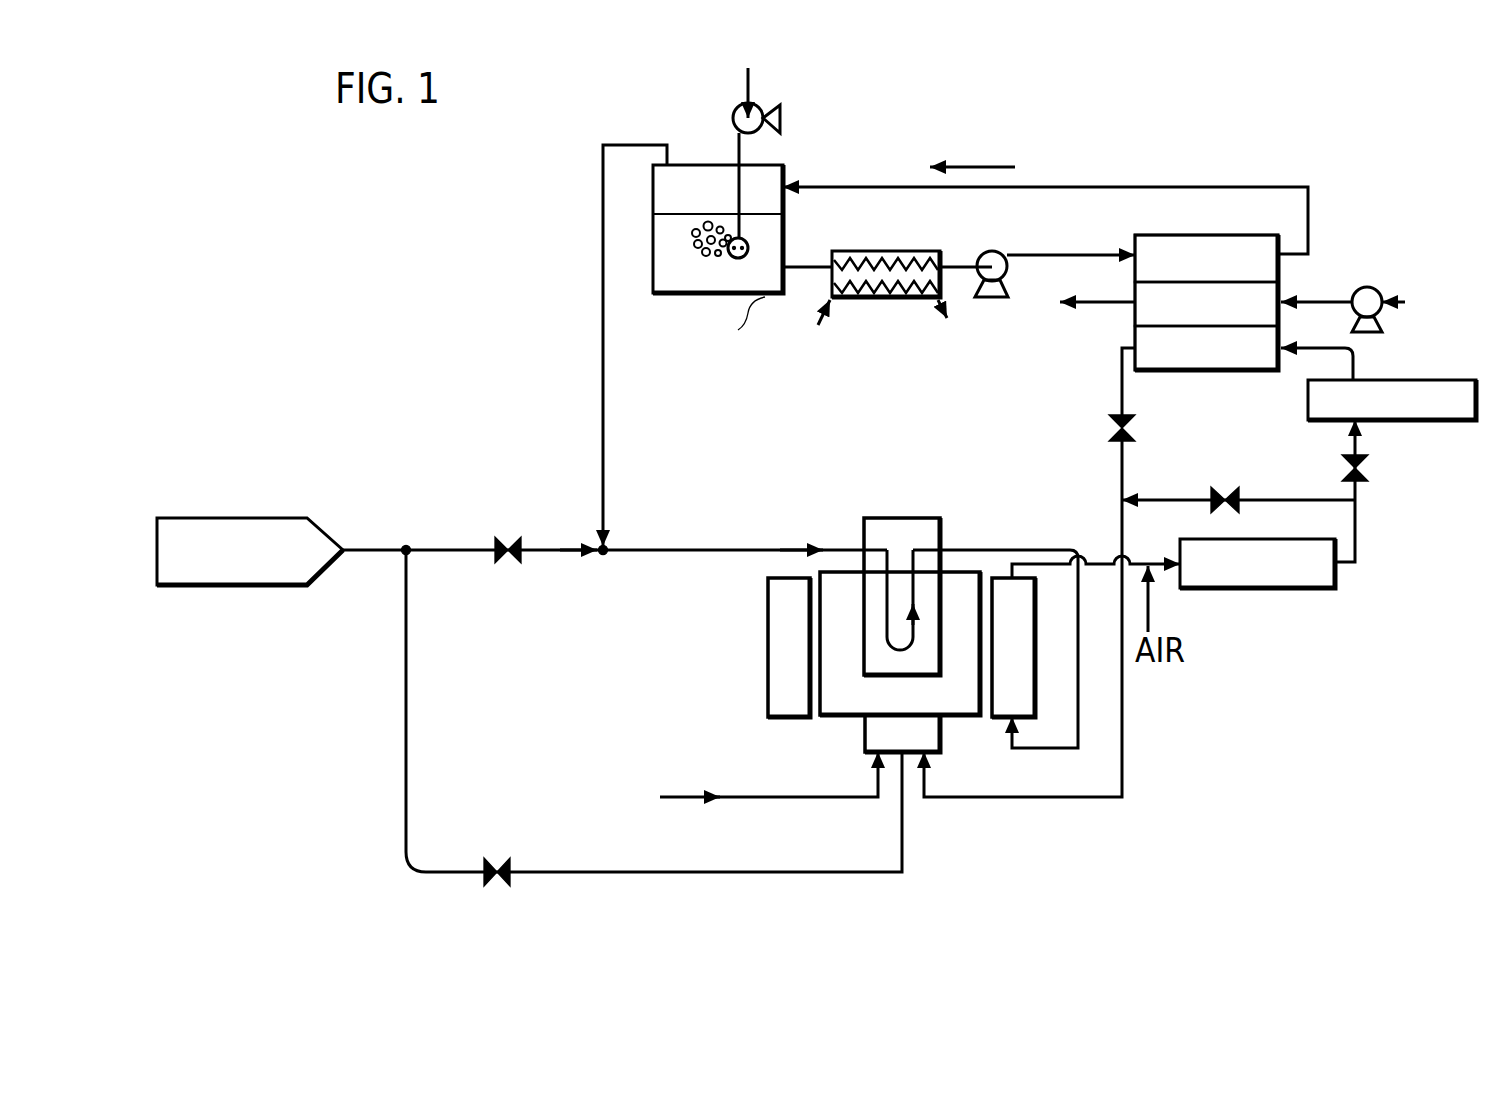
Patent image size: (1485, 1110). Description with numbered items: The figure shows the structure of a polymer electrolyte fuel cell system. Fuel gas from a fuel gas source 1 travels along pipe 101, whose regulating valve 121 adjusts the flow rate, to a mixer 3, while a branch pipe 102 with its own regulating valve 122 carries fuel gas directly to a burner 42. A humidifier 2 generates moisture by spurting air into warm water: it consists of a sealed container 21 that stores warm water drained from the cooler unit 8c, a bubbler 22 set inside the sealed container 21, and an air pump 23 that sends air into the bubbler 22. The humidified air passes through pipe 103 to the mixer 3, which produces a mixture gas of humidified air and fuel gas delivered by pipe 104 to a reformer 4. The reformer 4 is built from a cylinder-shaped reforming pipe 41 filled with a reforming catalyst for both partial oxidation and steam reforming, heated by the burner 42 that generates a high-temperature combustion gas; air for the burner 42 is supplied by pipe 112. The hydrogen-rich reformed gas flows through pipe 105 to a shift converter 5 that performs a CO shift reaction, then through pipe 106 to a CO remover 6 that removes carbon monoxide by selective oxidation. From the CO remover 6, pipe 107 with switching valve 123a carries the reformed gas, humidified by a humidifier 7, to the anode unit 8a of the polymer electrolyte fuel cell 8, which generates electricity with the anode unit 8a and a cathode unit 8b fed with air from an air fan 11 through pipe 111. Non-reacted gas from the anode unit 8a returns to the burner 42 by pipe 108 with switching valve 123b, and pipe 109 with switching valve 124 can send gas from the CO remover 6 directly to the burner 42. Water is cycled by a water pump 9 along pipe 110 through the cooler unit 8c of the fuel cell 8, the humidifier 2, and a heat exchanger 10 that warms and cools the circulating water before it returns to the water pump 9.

The fuel gas source 1 is at (248, 518).
The humidifier 2 is at (697, 307).
The mixer 3 is at (606, 553).
The reformer 4 is at (901, 615).
The shift converter 5 is at (798, 718).
The CO remover 6 is at (1340, 575).
The humidifier 7 is at (1422, 420).
The polymer electrolyte fuel cell 8 is at (1236, 317).
The anode unit 8a is at (1265, 368).
The cathode unit 8b is at (1275, 290).
The cooler unit 8c is at (1195, 234).
The water pump 9 is at (988, 300).
The heat exchanger 10 is at (893, 250).
The air fan 11 is at (1371, 287).
The sealed container 21 is at (746, 329).
The bubbler 22 is at (748, 243).
The air pump 23 is at (782, 123).
The reforming pipe 41 is at (927, 525).
The burner 42 is at (940, 745).
The pipe 101 is at (443, 552).
The pipe 102 is at (655, 872).
The pipe 103 is at (596, 334).
The pipe 104 is at (738, 535).
The pipe 105 is at (1022, 546).
The pipe 106 is at (1093, 560).
The pipe 107 is at (1358, 497).
The pipe 108 is at (1124, 705).
The pipe 109 is at (1157, 498).
The pipe 110 is at (1093, 186).
The pipe 111 is at (1333, 303).
The pipe 112 is at (795, 799).
The regulating valve 121 is at (500, 538).
The regulating valve 122 is at (490, 880).
The switching valve 123a is at (1347, 470).
The switching valve 123b is at (1108, 428).
The switching valve 124 is at (1216, 498).